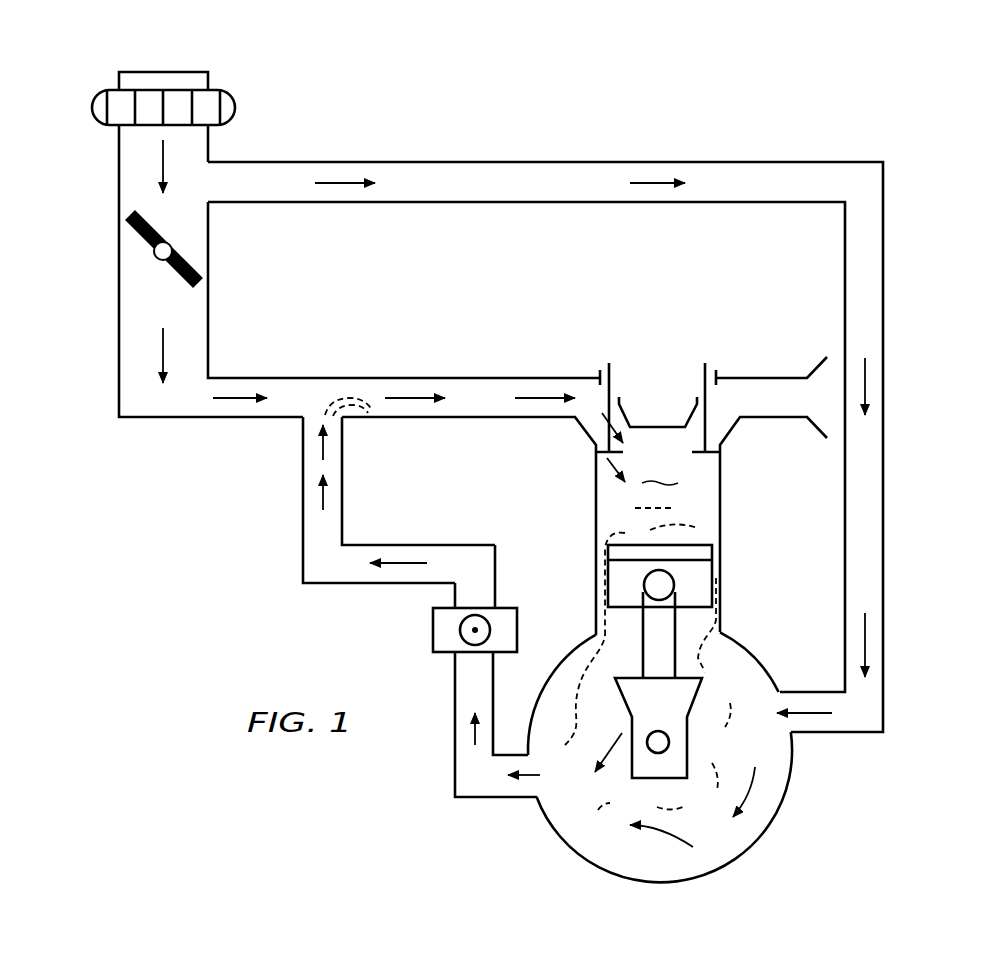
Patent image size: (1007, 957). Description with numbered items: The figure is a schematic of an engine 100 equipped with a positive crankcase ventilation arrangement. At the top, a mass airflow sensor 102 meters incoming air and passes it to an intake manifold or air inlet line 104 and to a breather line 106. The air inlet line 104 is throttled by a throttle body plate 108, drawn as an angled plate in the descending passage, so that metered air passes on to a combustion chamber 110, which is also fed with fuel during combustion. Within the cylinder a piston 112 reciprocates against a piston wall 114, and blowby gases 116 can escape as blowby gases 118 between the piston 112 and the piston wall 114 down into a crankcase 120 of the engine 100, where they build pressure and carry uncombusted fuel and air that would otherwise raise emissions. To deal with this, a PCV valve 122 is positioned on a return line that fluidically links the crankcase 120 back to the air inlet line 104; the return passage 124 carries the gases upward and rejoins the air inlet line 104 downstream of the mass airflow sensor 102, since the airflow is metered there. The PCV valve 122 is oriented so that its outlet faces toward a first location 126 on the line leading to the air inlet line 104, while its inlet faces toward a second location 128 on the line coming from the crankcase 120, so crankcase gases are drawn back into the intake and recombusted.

The engine 100 is at (690, 70).
The mass airflow sensor 102 is at (235, 107).
The air inlet line 104 is at (119, 280).
The breather line 106 is at (823, 162).
The throttle body plate 108 is at (152, 222).
The combustion chamber 110 is at (711, 443).
The piston 112 is at (700, 553).
The piston wall 114 is at (596, 488).
The blowby gases 116 is at (597, 577).
The blowby gases 118 is at (607, 640).
The crankcase 120 is at (778, 858).
The PCV valve 122 is at (433, 625).
The return passage 124 is at (303, 558).
The first location 126 is at (475, 600).
The second location 128 is at (477, 660).